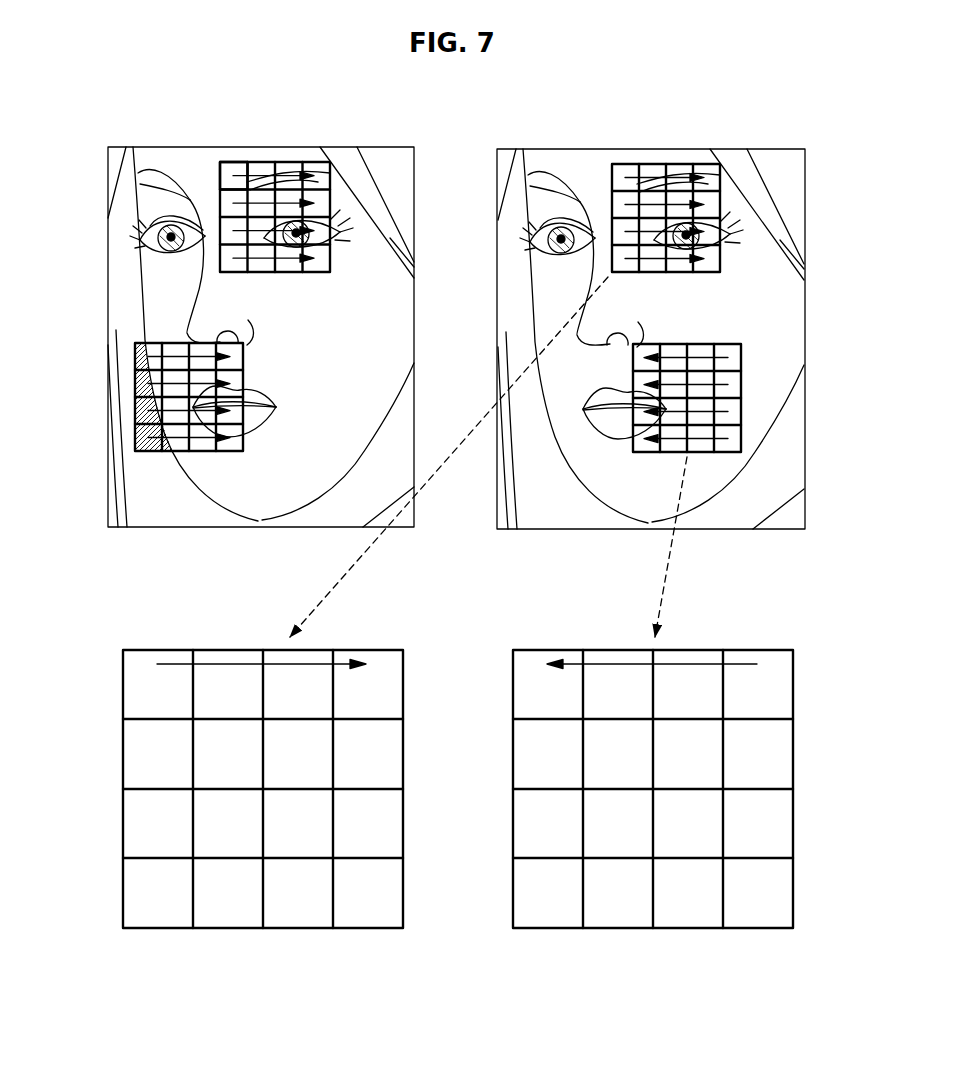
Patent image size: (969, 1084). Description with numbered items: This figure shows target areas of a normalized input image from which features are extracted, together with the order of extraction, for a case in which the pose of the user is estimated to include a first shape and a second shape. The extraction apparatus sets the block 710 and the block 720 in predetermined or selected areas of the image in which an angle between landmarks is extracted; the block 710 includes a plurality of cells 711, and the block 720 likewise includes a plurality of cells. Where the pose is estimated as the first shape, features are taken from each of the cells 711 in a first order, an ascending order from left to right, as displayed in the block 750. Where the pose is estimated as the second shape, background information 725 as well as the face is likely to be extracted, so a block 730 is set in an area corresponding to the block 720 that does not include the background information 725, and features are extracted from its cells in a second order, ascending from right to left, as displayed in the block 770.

The block 710 is at (260, 163).
The cells 711 is at (231, 166).
The block 720 is at (203, 452).
The background information 725 is at (134, 411).
The block 730 is at (734, 344).
The block 750 is at (368, 648).
The block 770 is at (758, 648).